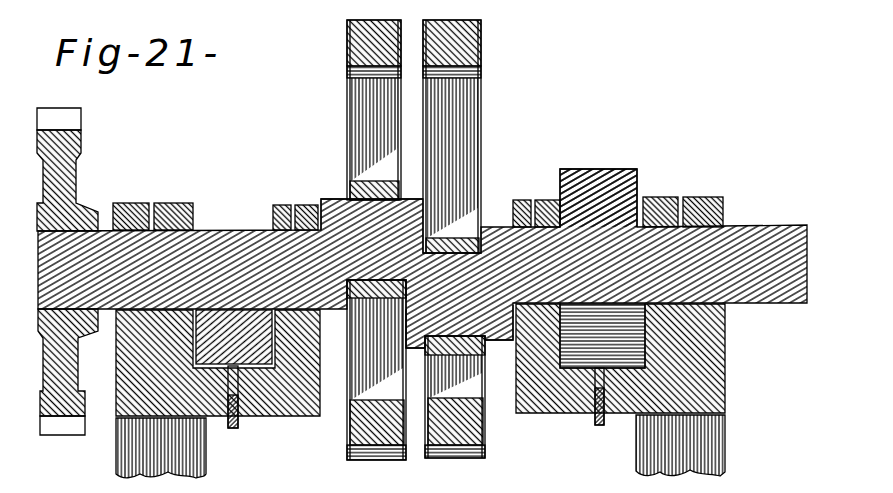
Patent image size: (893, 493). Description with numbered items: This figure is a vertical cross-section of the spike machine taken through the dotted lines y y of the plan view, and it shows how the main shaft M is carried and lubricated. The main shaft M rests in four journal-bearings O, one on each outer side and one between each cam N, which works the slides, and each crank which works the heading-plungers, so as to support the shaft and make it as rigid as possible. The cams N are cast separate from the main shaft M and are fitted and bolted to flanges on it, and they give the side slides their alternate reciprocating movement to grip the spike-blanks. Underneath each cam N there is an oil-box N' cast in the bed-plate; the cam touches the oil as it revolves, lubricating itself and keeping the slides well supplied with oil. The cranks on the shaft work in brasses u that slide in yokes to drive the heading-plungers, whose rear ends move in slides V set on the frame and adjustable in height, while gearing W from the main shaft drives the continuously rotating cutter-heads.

The main shaft M is at (422, 258).
The slides V is at (417, 273).
The gearing W is at (71, 271).
The cam N is at (420, 256).
The oil-box N' is at (387, 405).
The journal-bearing O is at (420, 391).
The brass u is at (416, 240).
The section line y is at (418, 130).